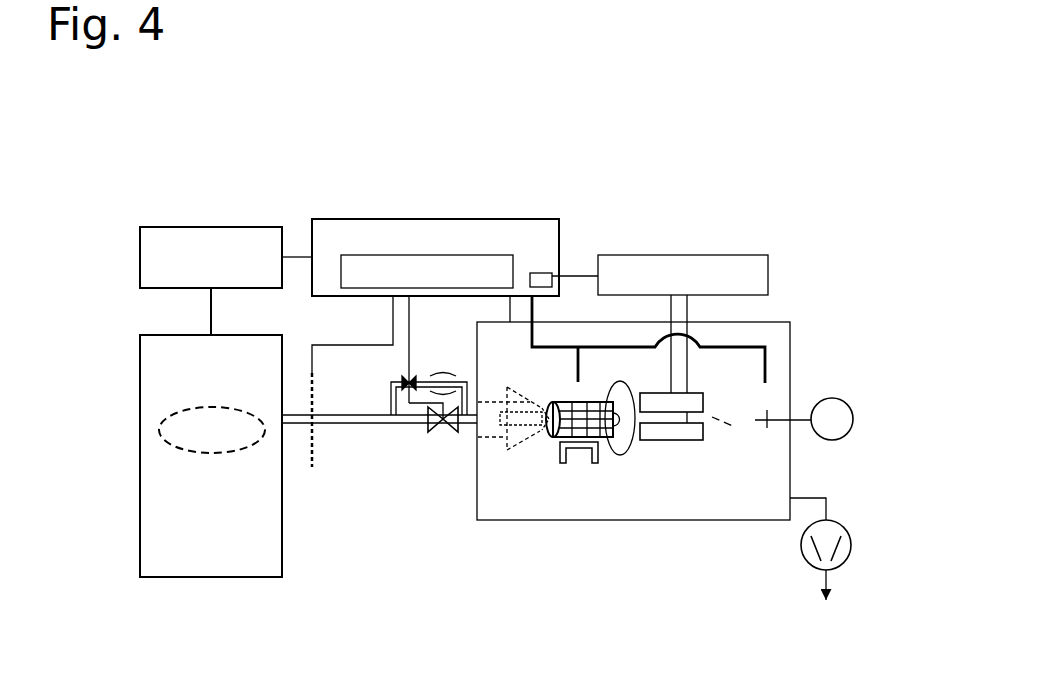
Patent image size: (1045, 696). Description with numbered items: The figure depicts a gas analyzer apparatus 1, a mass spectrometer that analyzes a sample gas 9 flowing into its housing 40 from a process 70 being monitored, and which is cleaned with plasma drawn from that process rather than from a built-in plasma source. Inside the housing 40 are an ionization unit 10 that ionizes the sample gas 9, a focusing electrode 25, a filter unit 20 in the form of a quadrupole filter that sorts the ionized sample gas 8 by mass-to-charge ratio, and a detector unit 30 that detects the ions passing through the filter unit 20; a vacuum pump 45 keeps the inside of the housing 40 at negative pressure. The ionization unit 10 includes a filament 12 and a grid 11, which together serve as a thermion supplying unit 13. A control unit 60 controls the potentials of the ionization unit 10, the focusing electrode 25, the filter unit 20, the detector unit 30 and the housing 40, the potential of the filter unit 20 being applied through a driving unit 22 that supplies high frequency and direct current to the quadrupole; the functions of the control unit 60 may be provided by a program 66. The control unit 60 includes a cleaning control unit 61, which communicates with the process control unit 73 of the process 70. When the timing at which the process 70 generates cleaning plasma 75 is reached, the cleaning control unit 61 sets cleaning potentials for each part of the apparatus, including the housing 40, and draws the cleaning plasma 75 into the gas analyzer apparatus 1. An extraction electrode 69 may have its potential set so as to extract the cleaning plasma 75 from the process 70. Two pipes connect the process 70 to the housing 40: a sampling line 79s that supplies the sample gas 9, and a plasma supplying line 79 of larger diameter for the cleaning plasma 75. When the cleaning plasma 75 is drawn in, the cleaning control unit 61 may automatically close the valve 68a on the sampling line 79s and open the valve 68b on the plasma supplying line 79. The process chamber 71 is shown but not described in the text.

The gas analyzer apparatus 1 is at (798, 276).
The ionized sample gas 8 is at (742, 420).
The sample gas 9 is at (527, 432).
The ionization unit 10 is at (576, 498).
The grid 11 is at (548, 438).
The filament 12 is at (598, 462).
The thermion supplying unit 13 is at (552, 464).
The filter unit 20 is at (684, 462).
The driving unit 22 is at (748, 270).
The focusing electrode 25 is at (622, 455).
The detector unit 30 is at (757, 450).
The housing 40 is at (790, 322).
The vacuum pump 45 is at (852, 547).
The control unit 60 is at (548, 222).
The cleaning control unit 61 is at (341, 282).
The program 66 is at (545, 282).
The valve 68a is at (410, 375).
The valve 68b is at (442, 433).
The extraction electrode 69 is at (313, 378).
The process 70 is at (138, 314).
The process chamber 71 is at (140, 370).
The process control unit 73 is at (150, 246).
The cleaning plasma 75 is at (158, 432).
The plasma supplying line 79 is at (343, 422).
The sampling line 79s is at (392, 400).